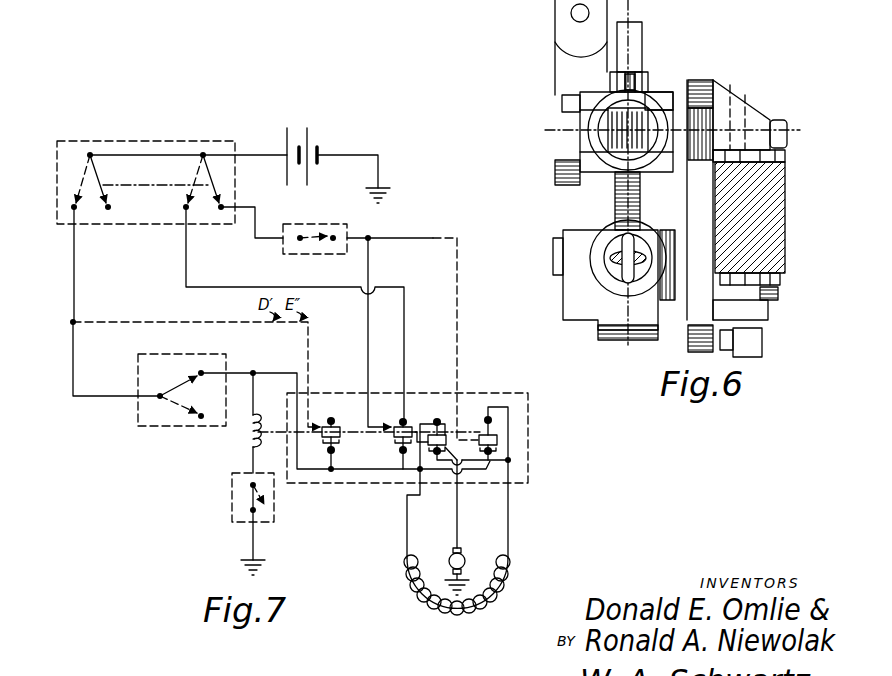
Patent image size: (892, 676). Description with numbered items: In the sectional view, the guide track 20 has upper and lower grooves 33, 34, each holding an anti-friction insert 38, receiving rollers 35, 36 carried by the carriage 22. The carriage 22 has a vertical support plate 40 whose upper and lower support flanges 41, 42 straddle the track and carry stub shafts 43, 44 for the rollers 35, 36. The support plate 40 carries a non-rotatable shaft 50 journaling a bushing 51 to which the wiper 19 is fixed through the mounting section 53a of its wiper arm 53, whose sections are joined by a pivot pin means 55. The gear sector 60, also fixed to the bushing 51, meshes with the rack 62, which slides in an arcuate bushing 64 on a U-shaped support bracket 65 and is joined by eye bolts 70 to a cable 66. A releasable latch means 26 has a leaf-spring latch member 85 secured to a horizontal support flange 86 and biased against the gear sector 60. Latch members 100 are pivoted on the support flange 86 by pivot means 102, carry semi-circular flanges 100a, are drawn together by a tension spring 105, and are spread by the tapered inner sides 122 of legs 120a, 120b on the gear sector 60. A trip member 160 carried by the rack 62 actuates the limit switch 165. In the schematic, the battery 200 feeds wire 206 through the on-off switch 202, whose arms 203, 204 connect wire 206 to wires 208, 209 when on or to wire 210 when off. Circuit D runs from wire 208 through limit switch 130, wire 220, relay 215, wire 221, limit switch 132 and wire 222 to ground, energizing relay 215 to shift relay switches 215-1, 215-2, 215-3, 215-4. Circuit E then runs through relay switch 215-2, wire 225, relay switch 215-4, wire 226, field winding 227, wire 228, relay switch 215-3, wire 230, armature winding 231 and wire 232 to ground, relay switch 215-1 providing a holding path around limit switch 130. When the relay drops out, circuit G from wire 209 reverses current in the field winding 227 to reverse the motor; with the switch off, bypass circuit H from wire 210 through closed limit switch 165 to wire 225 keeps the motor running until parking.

In FIG. 7, the battery 200 is at (318, 135).
In FIG. 7, the on-off switch 202 is at (163, 152).
In FIG. 7, the switch arm 203 is at (103, 184).
In FIG. 7, the switch arm 204 is at (210, 183).
In FIG. 7, the wire 206 is at (197, 150).
In FIG. 7, the wire 208 is at (73, 276).
In FIG. 7, the wire 209 is at (186, 276).
In FIG. 7, the wire 210 is at (255, 214).
In FIG. 7, the limit switch 165 is at (311, 224).
In FIG. 7, the wire 225 is at (368, 262).
In FIG. 7, the wire 220 is at (254, 370).
In FIG. 7, the limit switch 130 is at (170, 426).
In FIG. 6, the limit switch 130 is at (748, 345).
In FIG. 7, the relay 215 is at (249, 436).
In FIG. 7, the wire 221 is at (250, 455).
In FIG. 7, the limit switch 132 is at (232, 490).
In FIG. 7, the wire 222 is at (253, 552).
In FIG. 7, the relay switch 215-1 is at (336, 416).
In FIG. 7, the relay switch 215-2 is at (408, 417).
In FIG. 7, the relay switch 215-3 is at (442, 417).
In FIG. 7, the relay switch 215-4 is at (494, 417).
In FIG. 7, the wire 226 is at (508, 526).
In FIG. 7, the field winding 227 is at (508, 584).
In FIG. 7, the wire 228 is at (407, 540).
In FIG. 7, the wire 230 is at (457, 520).
In FIG. 7, the armature winding 231 is at (463, 558).
In FIG. 7, the wire 232 is at (465, 582).
In FIG. 7, the circuit D is at (70, 373).
In FIG. 7, the circuit E is at (362, 474).
In FIG. 7, the circuit G is at (258, 285).
In FIG. 7, the bypass circuit H is at (438, 236).
In FIG. 6, the pivot pin means 55 is at (571, 13).
In FIG. 6, the wiper arm 53 is at (553, 40).
In FIG. 6, the mounting section 53a is at (556, 70).
In FIG. 6, the wiper 19 is at (553, 94).
In FIG. 6, the leg portion 120a is at (563, 112).
In FIG. 6, the leg portion 120b is at (660, 95).
In FIG. 6, the non-rotatable shaft 50 is at (590, 135).
In FIG. 6, the latch members 100 is at (600, 140).
In FIG. 6, the flanges 100a is at (652, 170).
In FIG. 6, the support flange 86 is at (574, 180).
In FIG. 6, the inner sides 122 is at (616, 184).
In FIG. 6, the releasable latch means 26 is at (628, 70).
In FIG. 6, the pivot means 102 is at (642, 76).
In FIG. 6, the gear sector 60 is at (642, 28).
In FIG. 6, the latch member 85 is at (609, 76).
In FIG. 6, the bushing 51 is at (700, 80).
In FIG. 6, the support plate 40 is at (718, 82).
In FIG. 6, the support flange 41 is at (740, 98).
In FIG. 6, the stub shaft 43 is at (770, 115).
In FIG. 6, the tension spring 105 is at (703, 134).
In FIG. 6, the roller 35 is at (722, 166).
In FIG. 6, the U-shaped insert 38 is at (790, 182).
In FIG. 6, the groove 33 is at (767, 217).
In FIG. 6, the guide track 20 is at (788, 212).
In FIG. 6, the groove 34 is at (758, 268).
In FIG. 6, the roller 36 is at (711, 270).
In FIG. 6, the support flange 42 is at (778, 293).
In FIG. 6, the stub shaft 44 is at (768, 316).
In FIG. 6, the trip member 160 is at (628, 330).
In FIG. 6, the carriage 22 is at (686, 340).
In FIG. 6, the arcuate bushing 64 is at (592, 242).
In FIG. 6, the rack 62 is at (620, 242).
In FIG. 6, the eye bolts 70 is at (633, 240).
In FIG. 6, the cable 66 is at (658, 246).
In FIG. 6, the U-shaped support bracket 65 is at (556, 292).